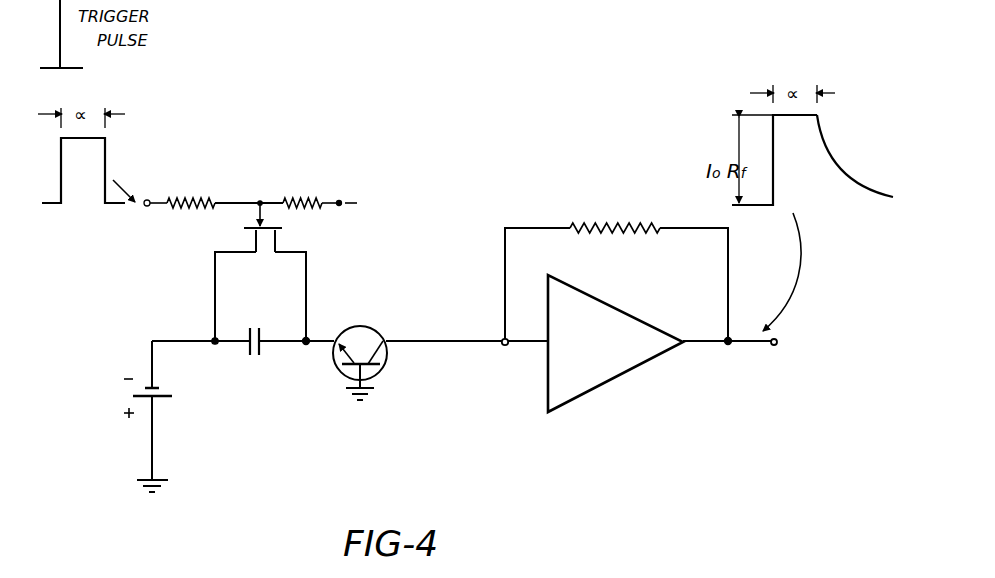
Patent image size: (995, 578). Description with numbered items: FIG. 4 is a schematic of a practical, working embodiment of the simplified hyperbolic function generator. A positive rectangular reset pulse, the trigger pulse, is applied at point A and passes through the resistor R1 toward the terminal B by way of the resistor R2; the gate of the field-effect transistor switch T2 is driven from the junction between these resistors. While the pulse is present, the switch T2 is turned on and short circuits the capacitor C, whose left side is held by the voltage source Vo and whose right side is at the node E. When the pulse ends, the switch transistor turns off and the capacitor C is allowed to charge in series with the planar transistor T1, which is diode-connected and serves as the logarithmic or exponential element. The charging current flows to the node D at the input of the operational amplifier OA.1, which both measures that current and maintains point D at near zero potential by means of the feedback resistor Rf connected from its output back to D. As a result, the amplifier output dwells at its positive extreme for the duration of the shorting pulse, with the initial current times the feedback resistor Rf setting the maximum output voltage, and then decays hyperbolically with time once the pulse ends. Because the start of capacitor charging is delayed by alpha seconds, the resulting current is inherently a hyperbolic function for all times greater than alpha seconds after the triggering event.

The point A is at (147, 192).
The point B is at (359, 207).
The capacitor C is at (253, 361).
The point D is at (504, 359).
The point E is at (308, 347).
The resistor R1 is at (182, 190).
The resistor R2 is at (311, 190).
The feedback resistor Rf is at (618, 268).
The planar transistor T1 is at (360, 345).
The field-effect transistor switch T2 is at (260, 271).
The operational amplifier OA.1 is at (615, 343).
The voltage source Vo is at (132, 416).